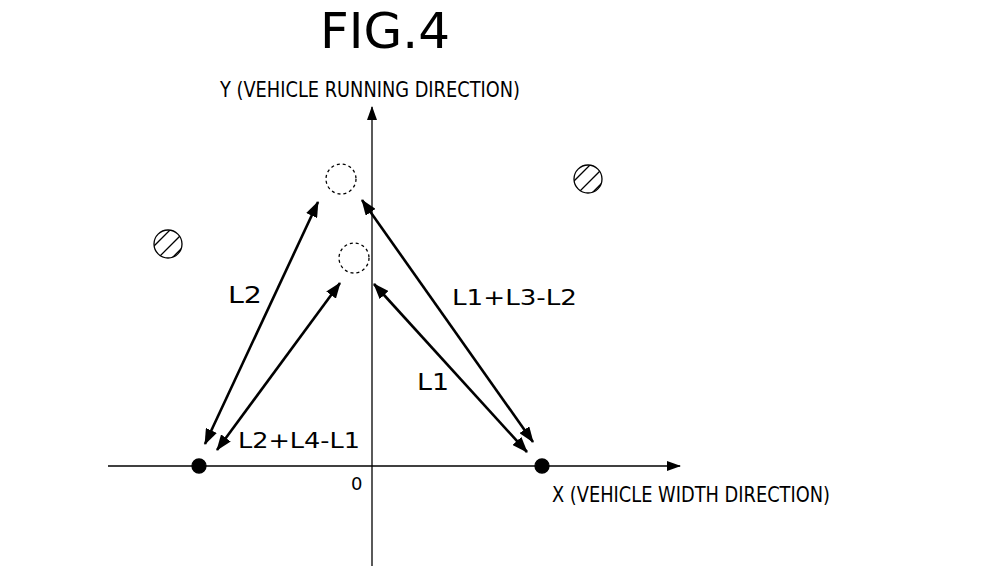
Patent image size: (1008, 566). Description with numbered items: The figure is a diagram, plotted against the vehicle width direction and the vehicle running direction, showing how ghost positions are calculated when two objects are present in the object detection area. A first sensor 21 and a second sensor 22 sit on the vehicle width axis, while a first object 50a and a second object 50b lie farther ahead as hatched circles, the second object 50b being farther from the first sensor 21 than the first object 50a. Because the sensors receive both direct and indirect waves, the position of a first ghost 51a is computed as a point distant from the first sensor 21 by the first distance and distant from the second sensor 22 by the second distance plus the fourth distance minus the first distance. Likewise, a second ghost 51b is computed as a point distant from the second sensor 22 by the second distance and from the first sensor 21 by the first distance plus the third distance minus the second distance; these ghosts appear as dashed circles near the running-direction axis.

The first sensor 21 is at (549, 461).
The second sensor 22 is at (195, 461).
The first object 50a is at (578, 170).
The second object 50b is at (158, 235).
The first ghost 51a is at (341, 253).
The second ghost 51b is at (331, 168).